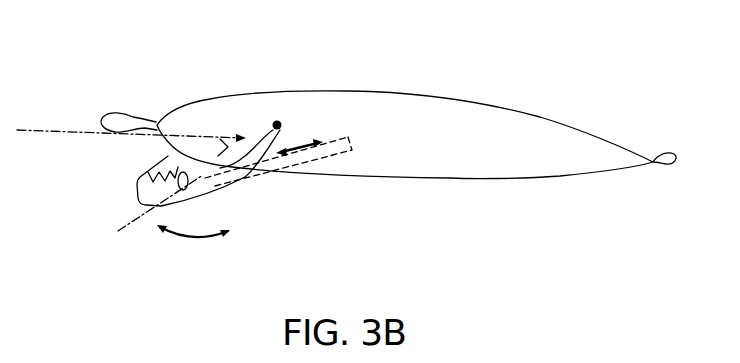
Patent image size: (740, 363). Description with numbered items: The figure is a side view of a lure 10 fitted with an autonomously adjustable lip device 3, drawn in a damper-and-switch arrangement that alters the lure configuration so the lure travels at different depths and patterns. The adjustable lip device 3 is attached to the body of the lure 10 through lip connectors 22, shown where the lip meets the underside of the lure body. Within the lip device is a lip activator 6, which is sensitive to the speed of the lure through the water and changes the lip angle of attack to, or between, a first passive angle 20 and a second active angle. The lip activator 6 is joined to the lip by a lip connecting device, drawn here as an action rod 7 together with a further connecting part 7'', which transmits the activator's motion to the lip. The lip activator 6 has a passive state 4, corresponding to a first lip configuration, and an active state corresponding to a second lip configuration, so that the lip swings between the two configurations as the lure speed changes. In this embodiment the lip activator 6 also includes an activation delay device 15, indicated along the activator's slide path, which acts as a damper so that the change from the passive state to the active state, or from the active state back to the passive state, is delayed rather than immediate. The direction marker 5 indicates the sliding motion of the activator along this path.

The lure 10 is at (185, 80).
The first passive angle 20 is at (168, 156).
The adjustable lip device 3 is at (137, 190).
The action rod 7 is at (250, 192).
The lip connectors 22 is at (277, 120).
The lip activator 6 is at (313, 120).
The activation delay device 15 is at (349, 137).
The sliding direction 5 is at (296, 141).
The passive state 4 is at (181, 236).
The lip connecting device 7'' is at (197, 228).